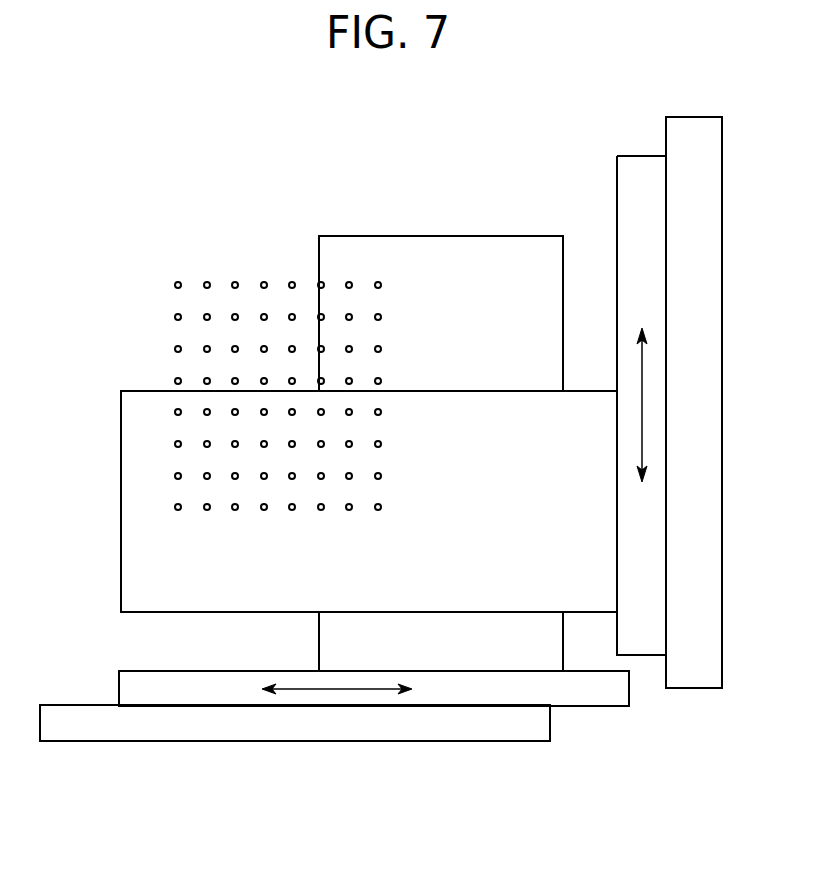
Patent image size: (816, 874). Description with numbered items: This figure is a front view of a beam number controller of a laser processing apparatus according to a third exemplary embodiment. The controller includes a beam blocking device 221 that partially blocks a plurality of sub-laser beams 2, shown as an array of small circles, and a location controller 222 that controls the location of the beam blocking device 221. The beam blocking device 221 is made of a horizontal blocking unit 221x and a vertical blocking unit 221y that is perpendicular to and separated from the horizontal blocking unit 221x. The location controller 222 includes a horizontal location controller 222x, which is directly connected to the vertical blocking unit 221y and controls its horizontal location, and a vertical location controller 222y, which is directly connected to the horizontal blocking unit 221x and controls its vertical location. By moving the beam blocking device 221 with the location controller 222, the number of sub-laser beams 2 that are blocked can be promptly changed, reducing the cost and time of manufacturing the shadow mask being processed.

The sub-laser beams 2 is at (208, 282).
The beam blocking device 221 is at (212, 124).
The horizontal blocking unit 221x is at (121, 422).
The vertical blocking unit 221y is at (355, 236).
The location controller 222 is at (710, 792).
The horizontal location controller 222x is at (531, 723).
The vertical location controller 222y is at (688, 665).